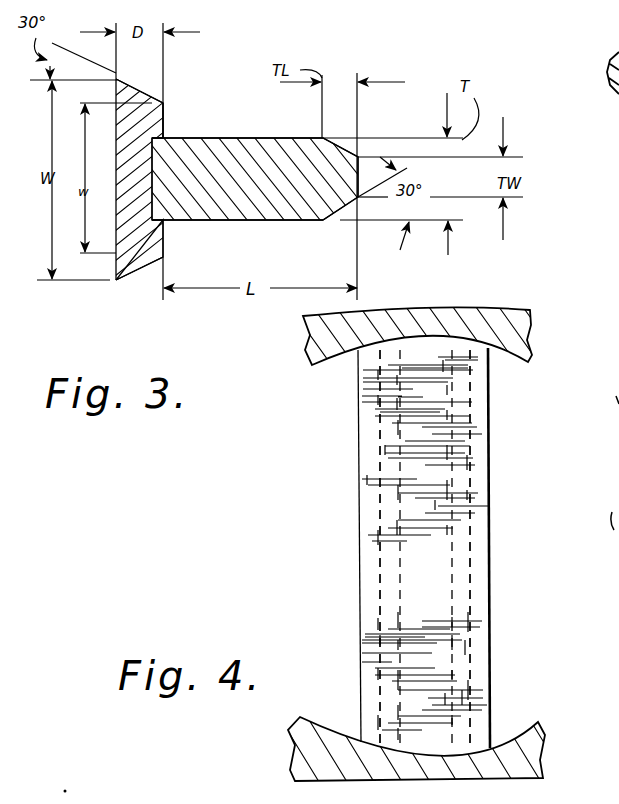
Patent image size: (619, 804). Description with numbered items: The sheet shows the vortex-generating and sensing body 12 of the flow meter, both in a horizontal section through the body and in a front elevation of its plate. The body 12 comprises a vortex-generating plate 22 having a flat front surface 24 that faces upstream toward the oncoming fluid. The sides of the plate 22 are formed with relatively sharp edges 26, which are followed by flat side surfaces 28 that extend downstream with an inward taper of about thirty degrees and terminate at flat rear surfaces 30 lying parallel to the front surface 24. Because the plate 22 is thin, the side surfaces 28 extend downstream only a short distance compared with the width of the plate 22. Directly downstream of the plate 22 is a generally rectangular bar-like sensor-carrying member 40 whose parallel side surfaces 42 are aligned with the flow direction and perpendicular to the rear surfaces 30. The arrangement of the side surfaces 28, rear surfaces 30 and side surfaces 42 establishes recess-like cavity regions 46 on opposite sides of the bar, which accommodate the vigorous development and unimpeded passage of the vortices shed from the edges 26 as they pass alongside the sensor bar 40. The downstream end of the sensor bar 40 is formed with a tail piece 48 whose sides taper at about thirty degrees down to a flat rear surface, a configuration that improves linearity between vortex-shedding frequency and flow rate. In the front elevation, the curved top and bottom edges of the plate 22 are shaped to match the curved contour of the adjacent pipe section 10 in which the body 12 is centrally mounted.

In FIG. 4, the pipe section 10 is at (519, 362).
In FIG. 3, the body 12 is at (251, 183).
In FIG. 4, the body 12 is at (407, 548).
In FIG. 3, the vortex-generating plate 22 is at (132, 203).
In FIG. 4, the vortex-generating plate 22 is at (490, 525).
In FIG. 3, the flat front surface 24 is at (116, 118).
In FIG. 4, the flat front surface 24 is at (444, 569).
In FIG. 3, the sharp edges 26 is at (118, 80).
In FIG. 3, the flat side surfaces 28 is at (163, 100).
In FIG. 4, the flat side surfaces 28 is at (377, 432).
In FIG. 3, the flat rear surfaces 30 is at (170, 118).
In FIG. 3, the sensor-carrying member 40 is at (309, 224).
In FIG. 3, the parallel side surfaces 42 is at (280, 137).
In FIG. 4, the parallel side surfaces 42 is at (397, 567).
In FIG. 3, the cavity regions 46 is at (171, 136).
In FIG. 3, the tail piece 48 is at (340, 122).